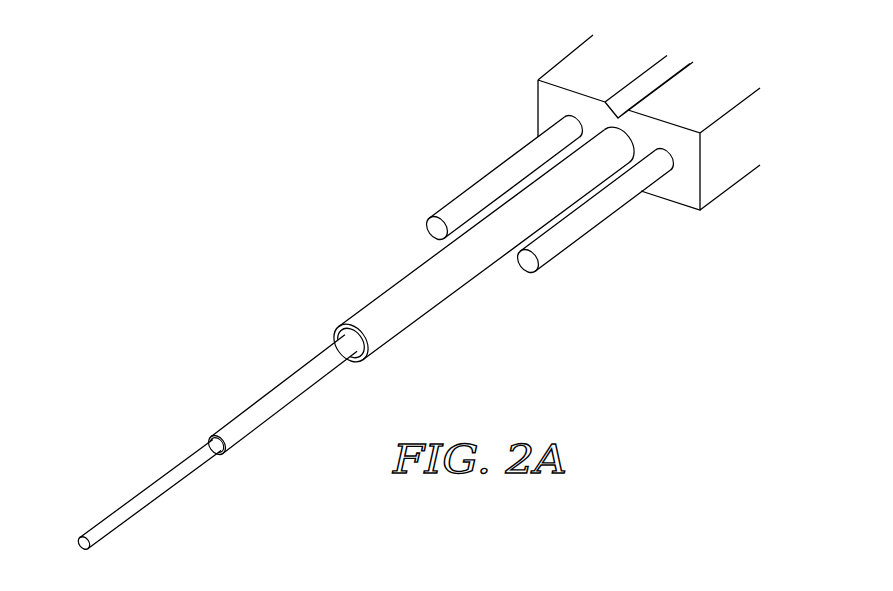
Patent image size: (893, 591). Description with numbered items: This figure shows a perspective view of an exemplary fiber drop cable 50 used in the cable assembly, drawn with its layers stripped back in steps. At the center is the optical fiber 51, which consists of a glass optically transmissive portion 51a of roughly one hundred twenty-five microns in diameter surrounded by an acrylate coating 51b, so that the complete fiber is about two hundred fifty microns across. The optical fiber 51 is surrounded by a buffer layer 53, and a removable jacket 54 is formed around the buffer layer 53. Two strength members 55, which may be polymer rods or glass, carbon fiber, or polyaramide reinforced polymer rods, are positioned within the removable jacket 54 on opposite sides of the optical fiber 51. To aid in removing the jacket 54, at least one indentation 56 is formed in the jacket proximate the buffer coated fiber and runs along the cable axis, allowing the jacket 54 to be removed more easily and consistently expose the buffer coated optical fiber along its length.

The fiber drop cable 50 is at (309, 176).
The optical fiber 51 is at (374, 368).
The glass optically transmissive portion 51a is at (152, 490).
The acrylate coating 51b is at (292, 378).
The buffer layer 53 is at (393, 297).
The removable jacket 54 is at (548, 107).
The strength members 55 is at (563, 230).
The indentation 56 is at (639, 92).